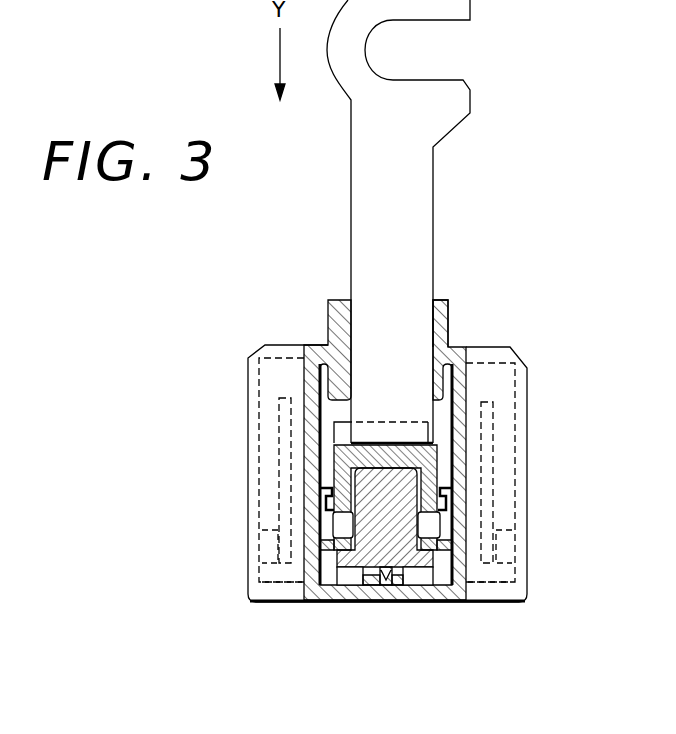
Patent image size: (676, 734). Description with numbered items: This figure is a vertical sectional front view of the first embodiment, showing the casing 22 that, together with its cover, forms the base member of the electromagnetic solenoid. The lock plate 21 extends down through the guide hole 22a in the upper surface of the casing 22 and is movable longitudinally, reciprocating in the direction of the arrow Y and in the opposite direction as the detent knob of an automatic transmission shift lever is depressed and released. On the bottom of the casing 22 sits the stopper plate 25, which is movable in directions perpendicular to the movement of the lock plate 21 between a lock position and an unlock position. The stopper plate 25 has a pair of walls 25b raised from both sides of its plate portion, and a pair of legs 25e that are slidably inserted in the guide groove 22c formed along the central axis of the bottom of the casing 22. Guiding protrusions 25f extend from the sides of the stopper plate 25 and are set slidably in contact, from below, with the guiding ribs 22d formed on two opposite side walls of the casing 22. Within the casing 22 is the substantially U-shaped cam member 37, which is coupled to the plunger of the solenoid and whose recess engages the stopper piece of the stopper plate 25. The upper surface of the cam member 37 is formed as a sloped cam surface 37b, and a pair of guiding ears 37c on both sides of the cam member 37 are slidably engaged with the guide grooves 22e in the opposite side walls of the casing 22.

The lock plate 21 is at (410, 212).
The casing 22 is at (262, 343).
The guide hole 22a is at (432, 320).
The guide groove 22c is at (385, 585).
The guiding ribs 22d is at (258, 518).
The guide grooves 22e is at (318, 498).
The stopper plate 25 is at (500, 582).
The walls 25b is at (282, 412).
The legs 25e is at (380, 576).
The guiding protrusions 25f is at (257, 558).
The cam member 37 is at (453, 463).
The cam surface 37b is at (433, 418).
The guiding ears 37c is at (318, 548).